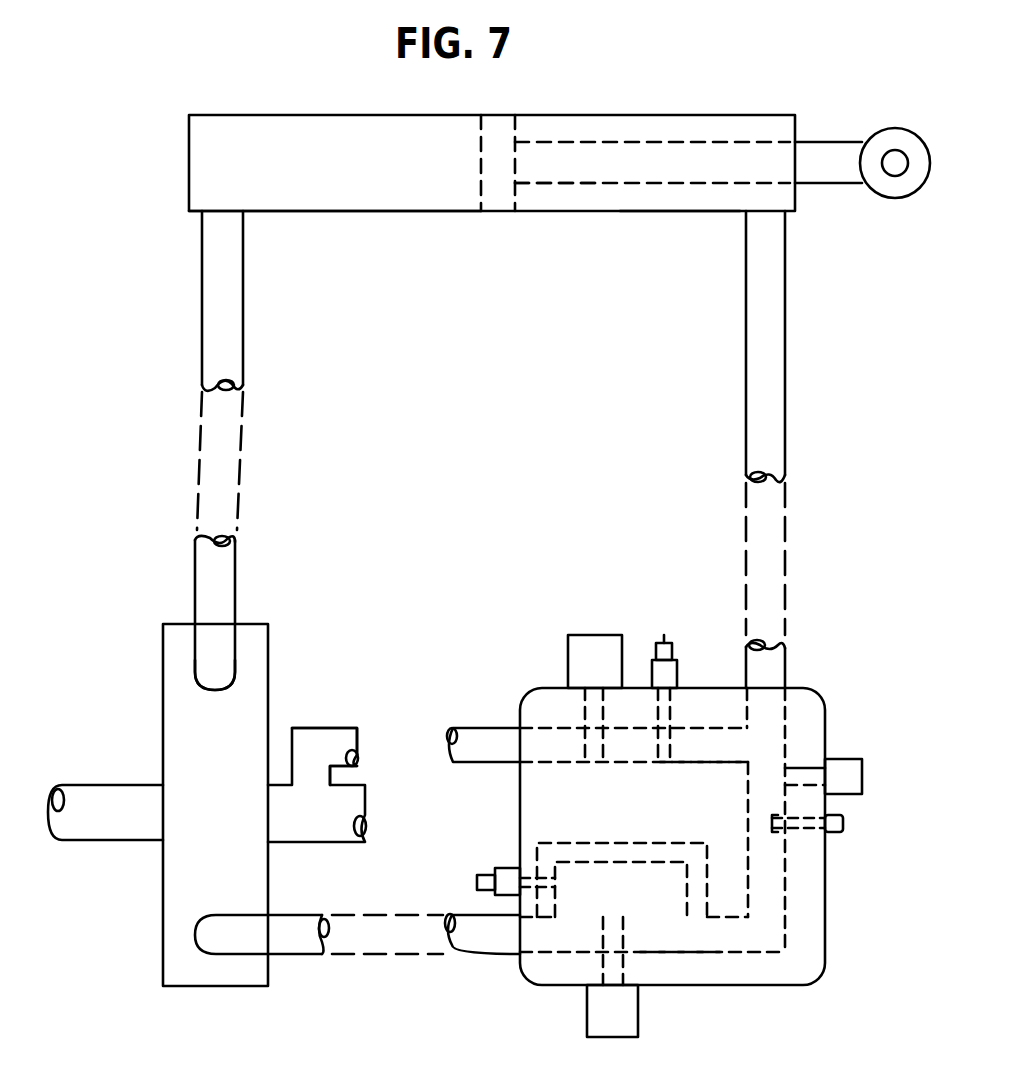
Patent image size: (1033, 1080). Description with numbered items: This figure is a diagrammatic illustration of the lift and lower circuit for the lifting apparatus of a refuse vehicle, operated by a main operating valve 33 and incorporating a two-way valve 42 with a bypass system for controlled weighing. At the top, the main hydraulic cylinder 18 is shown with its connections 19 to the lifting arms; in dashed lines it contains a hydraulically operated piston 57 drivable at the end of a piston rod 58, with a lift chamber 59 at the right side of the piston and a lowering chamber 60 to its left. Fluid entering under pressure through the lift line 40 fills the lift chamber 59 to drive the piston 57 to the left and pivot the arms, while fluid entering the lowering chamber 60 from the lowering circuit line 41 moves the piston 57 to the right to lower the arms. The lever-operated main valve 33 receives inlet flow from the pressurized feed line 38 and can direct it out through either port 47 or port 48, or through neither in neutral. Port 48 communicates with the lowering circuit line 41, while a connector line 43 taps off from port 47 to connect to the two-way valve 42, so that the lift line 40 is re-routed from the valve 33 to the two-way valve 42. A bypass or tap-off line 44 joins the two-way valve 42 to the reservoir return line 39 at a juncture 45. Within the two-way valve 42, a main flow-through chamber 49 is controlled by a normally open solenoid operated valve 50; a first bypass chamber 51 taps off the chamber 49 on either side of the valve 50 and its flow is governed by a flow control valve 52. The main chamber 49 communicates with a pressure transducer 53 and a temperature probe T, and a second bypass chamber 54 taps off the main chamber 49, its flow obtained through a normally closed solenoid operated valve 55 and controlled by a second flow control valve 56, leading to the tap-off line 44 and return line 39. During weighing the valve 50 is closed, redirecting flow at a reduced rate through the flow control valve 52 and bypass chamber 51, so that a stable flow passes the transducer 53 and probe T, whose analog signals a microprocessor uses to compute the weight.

The main hydraulic cylinder 18 is at (555, 115).
The connections 19 is at (878, 132).
The main operating valve 33 is at (200, 986).
The pressurized feed line 38 is at (107, 783).
The reservoir return line 39 is at (310, 842).
The lift line 40 is at (746, 472).
The lowering circuit line 41 is at (263, 553).
The two-way valve 42 is at (745, 985).
The connector line 43 is at (300, 955).
The bypass or tap-off line 44 is at (340, 728).
The juncture 45 is at (335, 777).
The port 47 is at (190, 935).
The port 48 is at (205, 700).
The main chamber 49 is at (668, 944).
The normally open solenoid operated valve 50 is at (587, 1012).
The first bypass chamber 51 is at (622, 856).
The flow control valve 52 is at (502, 866).
The pressure transducer 53 is at (843, 759).
The second bypass chamber 54 is at (727, 750).
The normally closed solenoid operated valve 55 is at (594, 635).
The second flow control valve 56 is at (677, 618).
The piston 57 is at (482, 187).
The piston rod 58 is at (572, 183).
The lift chamber 59 is at (676, 196).
The lowering chamber 60 is at (348, 185).
The temperature probe T is at (836, 832).